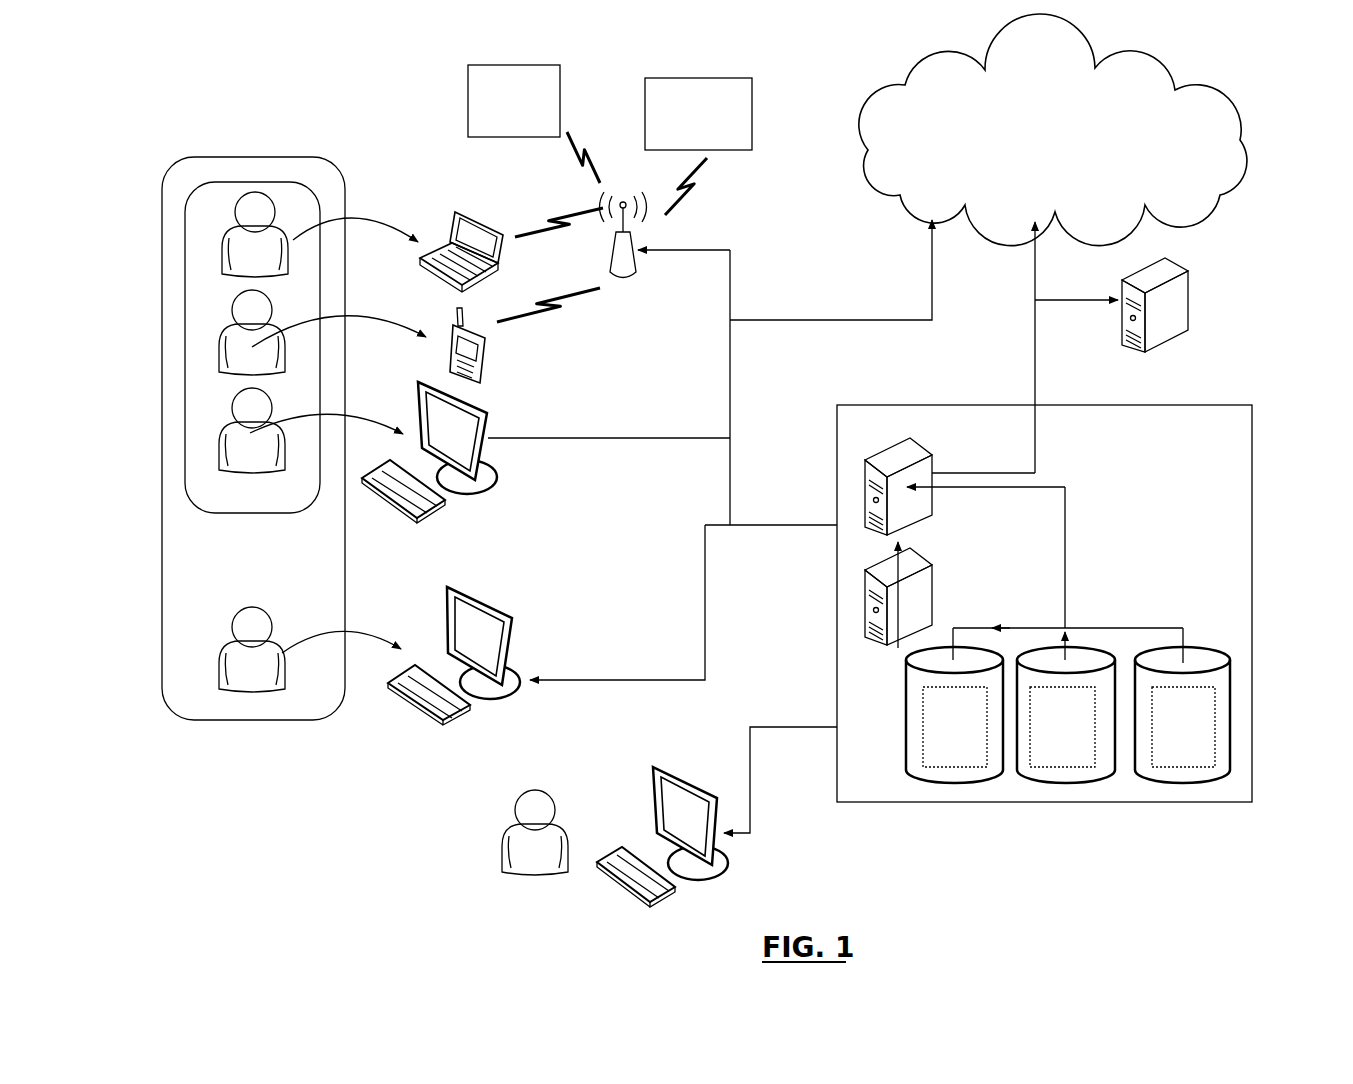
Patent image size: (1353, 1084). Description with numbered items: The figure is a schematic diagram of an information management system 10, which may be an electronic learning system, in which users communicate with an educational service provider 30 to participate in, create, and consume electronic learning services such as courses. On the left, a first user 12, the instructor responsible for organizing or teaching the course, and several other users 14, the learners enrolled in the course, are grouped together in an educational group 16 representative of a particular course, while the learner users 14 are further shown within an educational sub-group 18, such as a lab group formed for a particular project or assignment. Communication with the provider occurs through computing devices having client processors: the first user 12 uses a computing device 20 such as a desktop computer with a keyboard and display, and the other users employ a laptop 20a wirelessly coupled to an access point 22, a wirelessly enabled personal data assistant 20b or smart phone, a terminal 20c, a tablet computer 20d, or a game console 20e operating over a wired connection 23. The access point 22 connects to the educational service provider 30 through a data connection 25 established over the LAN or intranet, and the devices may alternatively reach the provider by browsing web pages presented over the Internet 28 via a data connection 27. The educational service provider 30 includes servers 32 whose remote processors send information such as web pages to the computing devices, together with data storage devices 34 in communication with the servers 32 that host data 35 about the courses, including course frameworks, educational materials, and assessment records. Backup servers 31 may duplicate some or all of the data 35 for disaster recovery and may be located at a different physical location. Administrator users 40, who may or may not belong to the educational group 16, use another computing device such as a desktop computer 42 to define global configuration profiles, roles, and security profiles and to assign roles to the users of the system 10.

The information management system 10 is at (205, 130).
The first user 12 is at (222, 650).
The users 14 is at (227, 230).
The educational group 16 is at (163, 527).
The educational sub-group 18 is at (296, 182).
The computing device 20 is at (513, 650).
The laptop 20a is at (477, 213).
The personal data assistant 20b is at (483, 313).
The terminal 20c is at (500, 485).
The tablet computer 20d is at (468, 98).
The game console 20e is at (700, 78).
The access point 22 is at (625, 285).
The wired connection 23 is at (602, 440).
The data connection 25 is at (797, 527).
The data connection 27 is at (855, 320).
The Internet 28 is at (873, 113).
The educational service provider 30 is at (857, 403).
The backup servers 31 is at (1163, 280).
The servers 32 is at (925, 457).
The data storage devices 34 is at (1082, 660).
The data 35 is at (945, 768).
The administrator users 40 is at (510, 830).
The desktop computer 42 is at (730, 857).